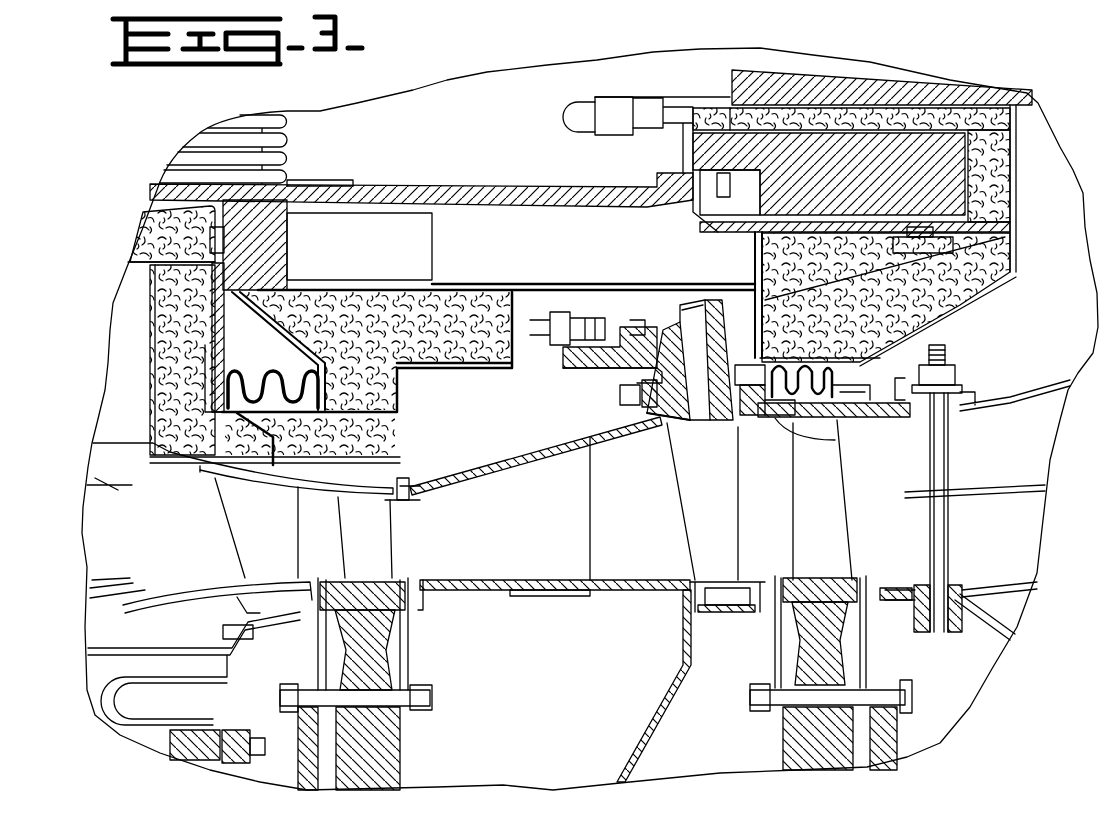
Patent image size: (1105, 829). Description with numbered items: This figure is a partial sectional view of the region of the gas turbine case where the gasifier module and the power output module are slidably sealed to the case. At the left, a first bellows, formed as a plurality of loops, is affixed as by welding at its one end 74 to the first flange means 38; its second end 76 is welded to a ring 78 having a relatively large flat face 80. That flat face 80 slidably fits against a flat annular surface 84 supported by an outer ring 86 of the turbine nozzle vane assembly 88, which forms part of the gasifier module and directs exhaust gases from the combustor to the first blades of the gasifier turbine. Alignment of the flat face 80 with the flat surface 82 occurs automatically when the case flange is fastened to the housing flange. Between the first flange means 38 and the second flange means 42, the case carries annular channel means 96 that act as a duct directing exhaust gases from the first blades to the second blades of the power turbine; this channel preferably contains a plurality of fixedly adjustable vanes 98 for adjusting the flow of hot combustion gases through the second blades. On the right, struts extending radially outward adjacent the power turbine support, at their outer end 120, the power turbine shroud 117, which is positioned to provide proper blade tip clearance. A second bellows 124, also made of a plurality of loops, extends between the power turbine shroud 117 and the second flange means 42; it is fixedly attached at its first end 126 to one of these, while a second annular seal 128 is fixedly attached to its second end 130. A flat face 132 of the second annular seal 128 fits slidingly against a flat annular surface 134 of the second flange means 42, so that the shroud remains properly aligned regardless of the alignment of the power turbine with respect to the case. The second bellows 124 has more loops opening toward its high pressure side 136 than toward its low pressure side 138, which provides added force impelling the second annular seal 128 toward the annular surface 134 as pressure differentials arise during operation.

The first flange means 38 is at (310, 361).
The second flange means 42 is at (768, 340).
The one end of first bellows 74 is at (345, 390).
The second end of first bellows 76 is at (212, 403).
The ring 78 is at (214, 386).
The flat face 80 is at (205, 362).
The flat surface 82 is at (248, 358).
The flat annular surface 84 is at (218, 456).
The outer ring 86 is at (385, 503).
The turbine nozzle vane assembly 88 is at (273, 548).
The annular channel means 96 is at (659, 533).
The fixedly adjustable vanes 98 is at (690, 468).
The power turbine shroud 117 is at (882, 402).
The outer end of struts 120 is at (950, 376).
The second bellows 124 is at (822, 381).
The first end of second bellows 126 is at (863, 424).
The second annular seal 128 is at (765, 412).
The second end of second bellows 130 is at (797, 420).
The flat face of second annular seal 132 is at (686, 412).
The flat annular surface of second flange means 134 is at (722, 392).
The high pressure side 136 is at (815, 405).
The low pressure side 138 is at (770, 340).